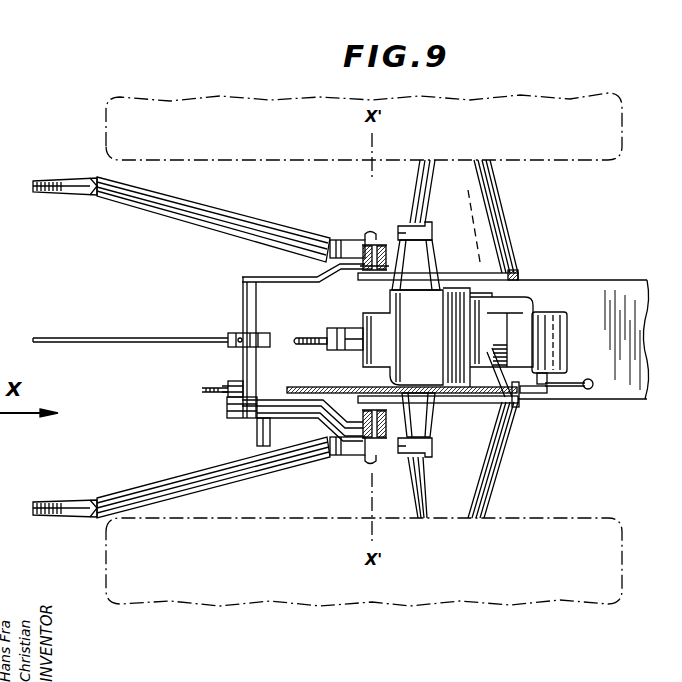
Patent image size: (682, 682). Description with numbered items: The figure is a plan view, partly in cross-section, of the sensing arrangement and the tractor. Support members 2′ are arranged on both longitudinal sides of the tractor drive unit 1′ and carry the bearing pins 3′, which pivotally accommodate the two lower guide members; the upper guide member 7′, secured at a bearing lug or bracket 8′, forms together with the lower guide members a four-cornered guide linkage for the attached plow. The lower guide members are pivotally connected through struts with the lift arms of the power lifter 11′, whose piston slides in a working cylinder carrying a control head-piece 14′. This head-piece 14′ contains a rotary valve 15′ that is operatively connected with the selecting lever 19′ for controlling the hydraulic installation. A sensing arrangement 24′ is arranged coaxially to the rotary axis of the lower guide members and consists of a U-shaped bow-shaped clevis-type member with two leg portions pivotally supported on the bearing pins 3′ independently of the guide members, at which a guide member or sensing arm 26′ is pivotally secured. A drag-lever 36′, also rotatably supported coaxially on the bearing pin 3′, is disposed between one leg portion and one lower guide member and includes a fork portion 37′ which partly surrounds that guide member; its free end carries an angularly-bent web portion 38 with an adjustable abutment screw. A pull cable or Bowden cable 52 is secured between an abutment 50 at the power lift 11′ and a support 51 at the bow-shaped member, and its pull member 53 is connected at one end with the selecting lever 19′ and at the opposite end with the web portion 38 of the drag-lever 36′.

The tractor drive unit 1′ is at (618, 280).
The support member 2′ is at (510, 272).
The bearing pin 3′ is at (368, 233).
The upper guide member 7′ is at (315, 335).
The bearing lug or bracket 8′ is at (352, 350).
The power lifter 11′ is at (447, 290).
The control head-piece 14′ is at (567, 317).
The rotary valve 15′ is at (560, 350).
The selecting lever 19′ is at (589, 390).
The sensing arrangement 24′ is at (274, 327).
The guide member or sensing arm 26′ is at (96, 337).
The drag-lever 36′ is at (283, 414).
The fork portion 37′ is at (259, 443).
The angularly-bent web portion 38 is at (226, 406).
The abutment 50 is at (517, 406).
The support 51 is at (240, 384).
The pull cable or Bowden cable 52 is at (437, 387).
The pull member 53 is at (532, 393).